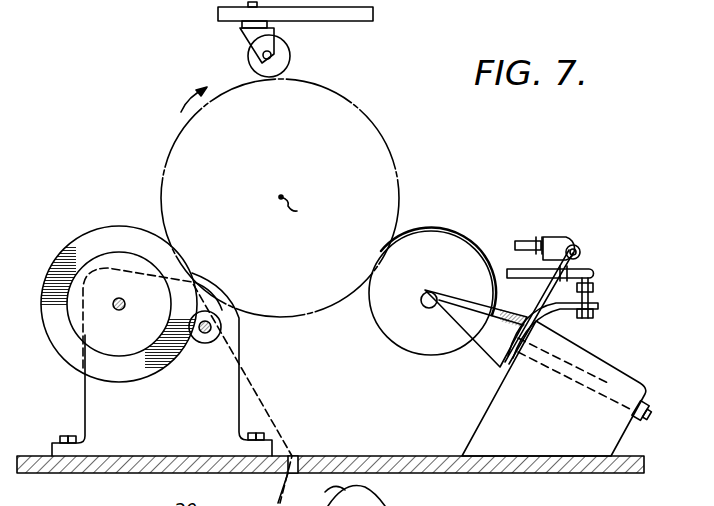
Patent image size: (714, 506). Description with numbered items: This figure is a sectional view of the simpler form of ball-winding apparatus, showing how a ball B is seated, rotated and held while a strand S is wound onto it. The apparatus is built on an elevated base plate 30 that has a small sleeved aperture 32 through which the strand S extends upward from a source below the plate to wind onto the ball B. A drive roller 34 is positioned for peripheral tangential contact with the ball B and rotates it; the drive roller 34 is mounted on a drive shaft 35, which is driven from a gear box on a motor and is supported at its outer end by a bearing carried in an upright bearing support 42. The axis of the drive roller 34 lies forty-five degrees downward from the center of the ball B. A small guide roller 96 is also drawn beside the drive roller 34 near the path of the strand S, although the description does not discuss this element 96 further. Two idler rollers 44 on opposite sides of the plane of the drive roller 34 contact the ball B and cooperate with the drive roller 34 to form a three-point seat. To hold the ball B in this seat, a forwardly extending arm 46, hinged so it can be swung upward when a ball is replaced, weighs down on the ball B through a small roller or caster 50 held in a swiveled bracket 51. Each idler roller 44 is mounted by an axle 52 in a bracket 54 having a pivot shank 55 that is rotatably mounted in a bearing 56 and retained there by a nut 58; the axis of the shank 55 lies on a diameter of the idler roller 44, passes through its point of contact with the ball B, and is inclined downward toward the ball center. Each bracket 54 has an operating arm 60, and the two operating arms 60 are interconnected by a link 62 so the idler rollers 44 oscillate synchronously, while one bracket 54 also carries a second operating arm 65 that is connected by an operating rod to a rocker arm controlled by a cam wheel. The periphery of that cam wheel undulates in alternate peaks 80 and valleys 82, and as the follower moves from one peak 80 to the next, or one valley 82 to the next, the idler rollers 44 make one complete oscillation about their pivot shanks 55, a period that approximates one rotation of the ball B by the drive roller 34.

The base plate 30 is at (408, 456).
The sleeved aperture 32 is at (300, 456).
The arm 46 is at (352, 21).
The roller or caster 50 is at (248, 62).
The swiveled bracket 51 is at (240, 31).
The ball B is at (372, 121).
The drive roller 34 is at (102, 238).
The drive shaft 35 is at (119, 311).
The strand S is at (262, 398).
The upright bearing support 42 is at (98, 400).
The guide roller 96 is at (200, 345).
The idler roller 44 is at (436, 231).
The axle 52 is at (423, 302).
The bracket 54 is at (492, 349).
The operating arm 60 is at (512, 272).
The link 62 is at (521, 241).
The second operating arm 65 is at (570, 312).
The pivot shank 55 is at (611, 384).
The nut 58 is at (646, 404).
The bearing 56 is at (618, 433).
The valley 82 is at (264, 489).
The peak 80 is at (341, 495).